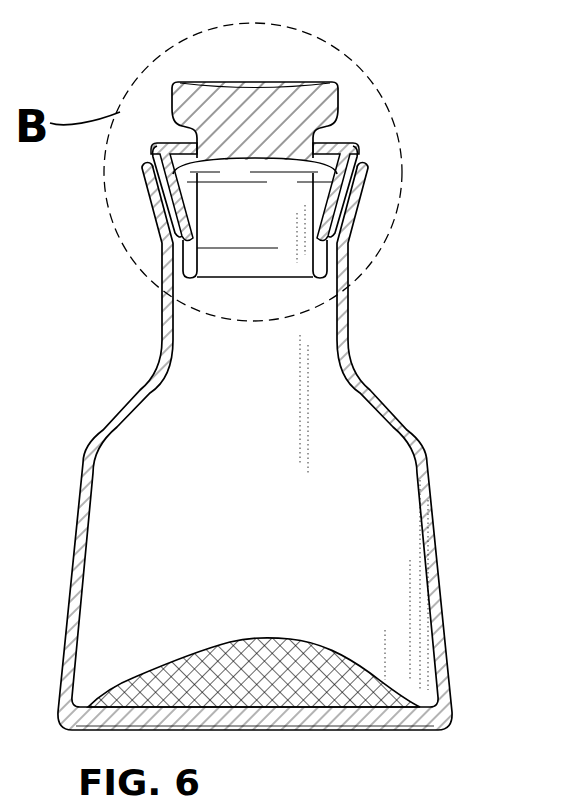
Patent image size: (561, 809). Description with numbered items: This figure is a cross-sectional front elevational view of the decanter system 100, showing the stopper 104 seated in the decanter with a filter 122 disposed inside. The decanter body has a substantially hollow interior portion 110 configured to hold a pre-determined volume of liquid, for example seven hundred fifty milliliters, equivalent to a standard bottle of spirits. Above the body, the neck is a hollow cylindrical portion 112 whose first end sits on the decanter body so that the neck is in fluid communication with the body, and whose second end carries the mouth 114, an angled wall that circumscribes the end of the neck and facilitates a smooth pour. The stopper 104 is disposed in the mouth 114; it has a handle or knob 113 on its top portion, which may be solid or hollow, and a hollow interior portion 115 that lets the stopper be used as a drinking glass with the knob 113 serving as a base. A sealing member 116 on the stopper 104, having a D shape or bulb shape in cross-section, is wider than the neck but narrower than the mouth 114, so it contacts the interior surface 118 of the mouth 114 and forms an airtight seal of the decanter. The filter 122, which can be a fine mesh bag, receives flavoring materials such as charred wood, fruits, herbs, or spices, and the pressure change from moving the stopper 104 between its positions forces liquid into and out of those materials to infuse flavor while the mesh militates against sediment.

The decanter system 100 is at (404, 66).
The stopper 104 is at (314, 92).
The interior portion 110 is at (311, 573).
The hollow cylindrical portion 112 is at (187, 322).
The knob 113 is at (180, 92).
The mouth 114 is at (357, 218).
The hollow interior portion 115 is at (300, 270).
The sealing member 116 is at (353, 151).
The interior surface 118 is at (157, 186).
The filter 122 is at (262, 639).